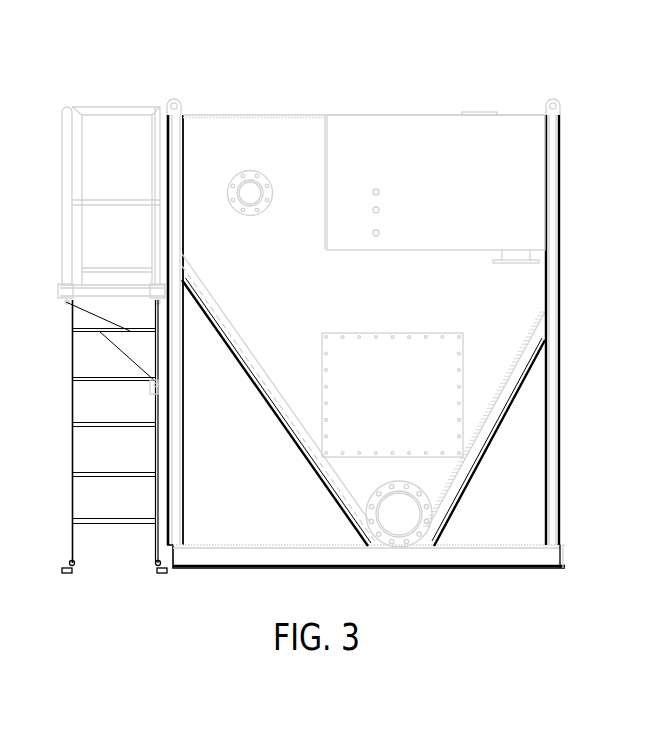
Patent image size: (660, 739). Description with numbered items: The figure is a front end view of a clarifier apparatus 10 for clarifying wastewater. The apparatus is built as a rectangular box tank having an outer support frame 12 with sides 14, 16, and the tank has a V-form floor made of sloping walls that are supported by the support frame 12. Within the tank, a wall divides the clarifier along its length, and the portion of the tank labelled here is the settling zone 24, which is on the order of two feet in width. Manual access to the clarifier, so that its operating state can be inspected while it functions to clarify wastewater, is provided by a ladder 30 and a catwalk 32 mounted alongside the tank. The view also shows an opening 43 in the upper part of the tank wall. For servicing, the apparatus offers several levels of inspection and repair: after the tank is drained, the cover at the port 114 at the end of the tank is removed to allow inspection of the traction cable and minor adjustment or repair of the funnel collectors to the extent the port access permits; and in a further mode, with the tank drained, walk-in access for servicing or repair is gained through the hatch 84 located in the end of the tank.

The container system 10 is at (326, 312).
The outer support frame 12 is at (553, 417).
The side 14 is at (167, 150).
The side 16 is at (562, 273).
The settling zone 24 is at (273, 260).
The ladder 30 is at (77, 378).
The catwalk 32 is at (118, 283).
The inlet port flange 43 is at (253, 195).
The hatch 84 is at (389, 363).
The port 114 is at (394, 513).